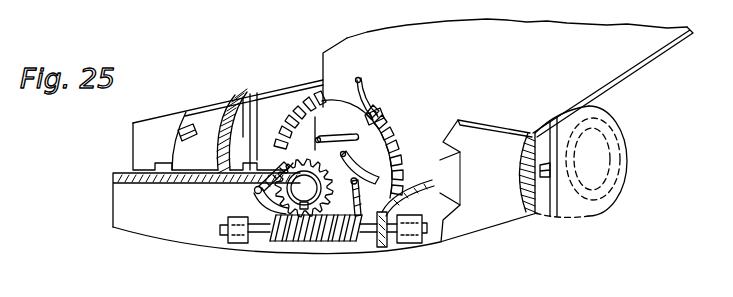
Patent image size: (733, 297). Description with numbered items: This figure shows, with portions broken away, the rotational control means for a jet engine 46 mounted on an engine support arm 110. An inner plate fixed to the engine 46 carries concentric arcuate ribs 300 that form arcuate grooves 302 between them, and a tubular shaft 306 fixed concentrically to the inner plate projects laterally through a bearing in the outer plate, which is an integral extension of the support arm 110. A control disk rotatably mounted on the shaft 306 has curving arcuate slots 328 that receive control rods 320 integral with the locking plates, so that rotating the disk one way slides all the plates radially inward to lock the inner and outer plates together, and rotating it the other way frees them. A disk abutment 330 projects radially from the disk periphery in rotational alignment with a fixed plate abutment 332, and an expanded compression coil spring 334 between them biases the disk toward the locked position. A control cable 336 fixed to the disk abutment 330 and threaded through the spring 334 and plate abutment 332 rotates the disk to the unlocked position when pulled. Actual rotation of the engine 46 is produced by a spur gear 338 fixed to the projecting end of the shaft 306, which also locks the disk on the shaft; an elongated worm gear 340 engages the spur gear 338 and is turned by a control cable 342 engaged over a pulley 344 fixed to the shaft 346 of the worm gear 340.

The jet engine 46 is at (607, 182).
The engine support arm 110 is at (630, 52).
The arcuate rib 300 is at (197, 120).
The arcuate groove 302 is at (262, 107).
The tubular shaft 306 is at (310, 238).
The control rod 320 is at (250, 182).
The arcuate slot 328 is at (338, 137).
The disk abutment 330 is at (437, 170).
The plate abutment 332 is at (378, 118).
The compression coil spring 334 is at (392, 152).
The control cable 336 is at (379, 93).
The spur gear 338 is at (270, 227).
The worm gear 340 is at (318, 232).
The control cable 342 is at (445, 213).
The pulley 344 is at (396, 243).
The worm gear shaft 346 is at (377, 243).